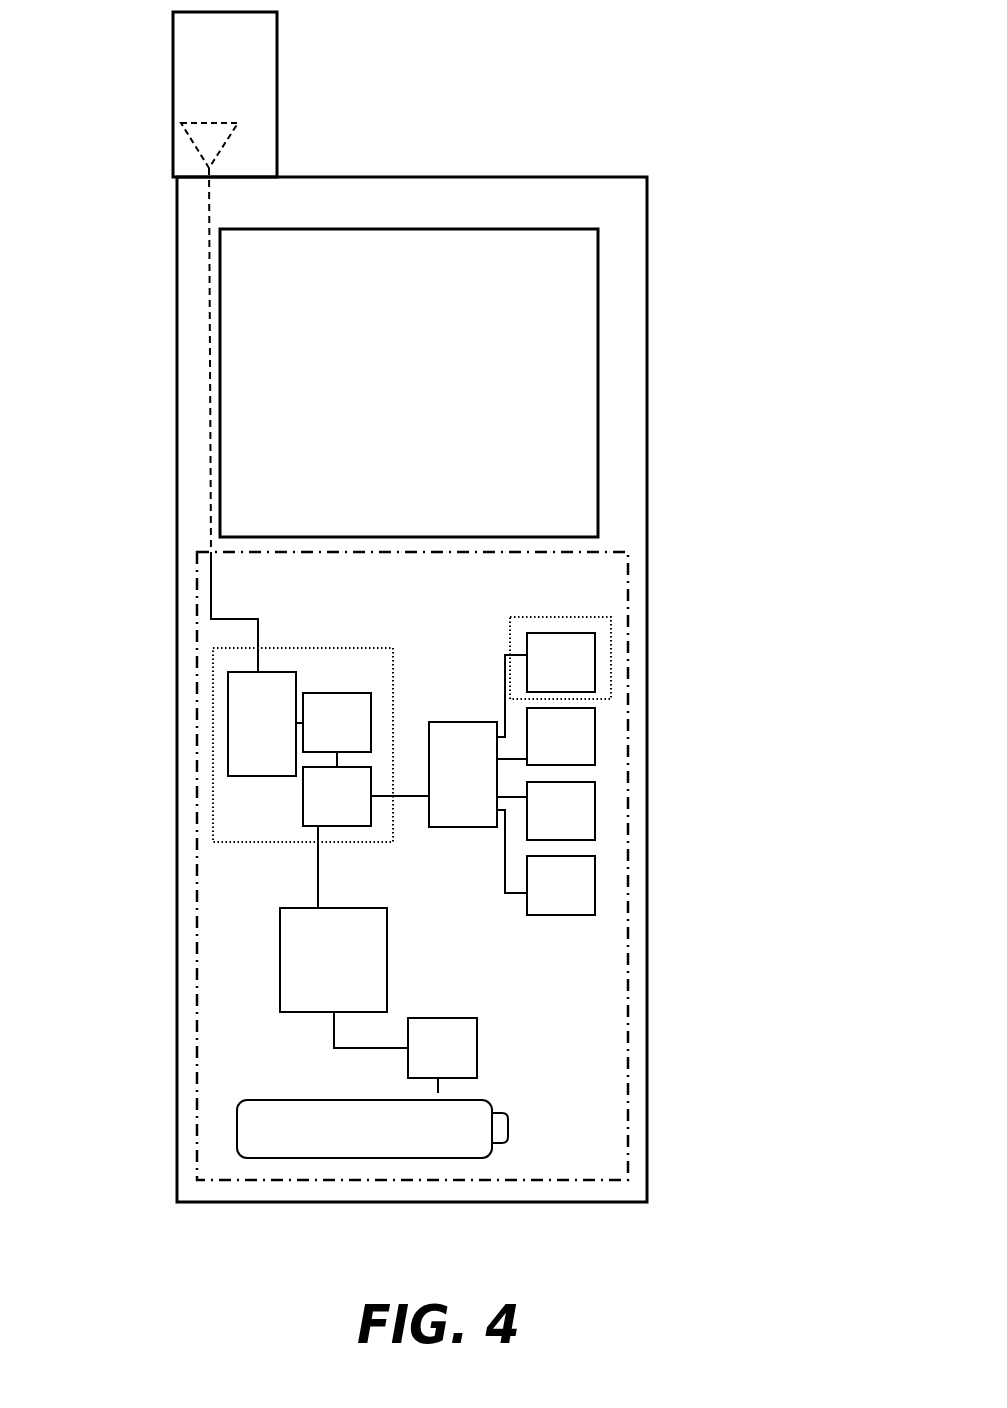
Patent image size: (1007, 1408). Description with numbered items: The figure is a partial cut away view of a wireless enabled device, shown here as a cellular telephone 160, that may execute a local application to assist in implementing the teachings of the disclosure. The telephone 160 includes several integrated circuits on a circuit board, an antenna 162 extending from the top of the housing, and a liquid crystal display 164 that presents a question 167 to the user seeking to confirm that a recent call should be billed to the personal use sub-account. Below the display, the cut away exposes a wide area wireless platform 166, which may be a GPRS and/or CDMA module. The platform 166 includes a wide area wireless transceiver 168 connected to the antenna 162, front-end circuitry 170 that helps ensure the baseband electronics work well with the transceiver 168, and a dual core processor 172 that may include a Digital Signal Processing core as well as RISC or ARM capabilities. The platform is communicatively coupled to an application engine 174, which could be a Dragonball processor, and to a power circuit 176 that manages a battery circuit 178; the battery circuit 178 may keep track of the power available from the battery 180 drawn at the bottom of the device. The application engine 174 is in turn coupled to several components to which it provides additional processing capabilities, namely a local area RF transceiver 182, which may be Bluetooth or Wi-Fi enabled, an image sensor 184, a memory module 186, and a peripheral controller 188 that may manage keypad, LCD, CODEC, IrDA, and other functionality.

The cellular telephone 160 is at (752, 119).
The antenna 162 is at (186, 137).
The liquid crystal display 164 is at (533, 304).
The wide area wireless platform 166 is at (341, 866).
The question 167 is at (493, 248).
The wide area wireless transceiver 168 is at (293, 743).
The front-end circuitry 170 is at (366, 743).
The dual core processor 172 is at (366, 816).
The application engine 174 is at (494, 793).
The power circuit 176 is at (362, 978).
The battery circuit 178 is at (474, 1068).
The battery 180 is at (385, 1148).
The local area RF transceiver 182 is at (592, 683).
The image sensor 184 is at (592, 758).
The memory module 186 is at (592, 833).
The peripheral controller 188 is at (592, 908).